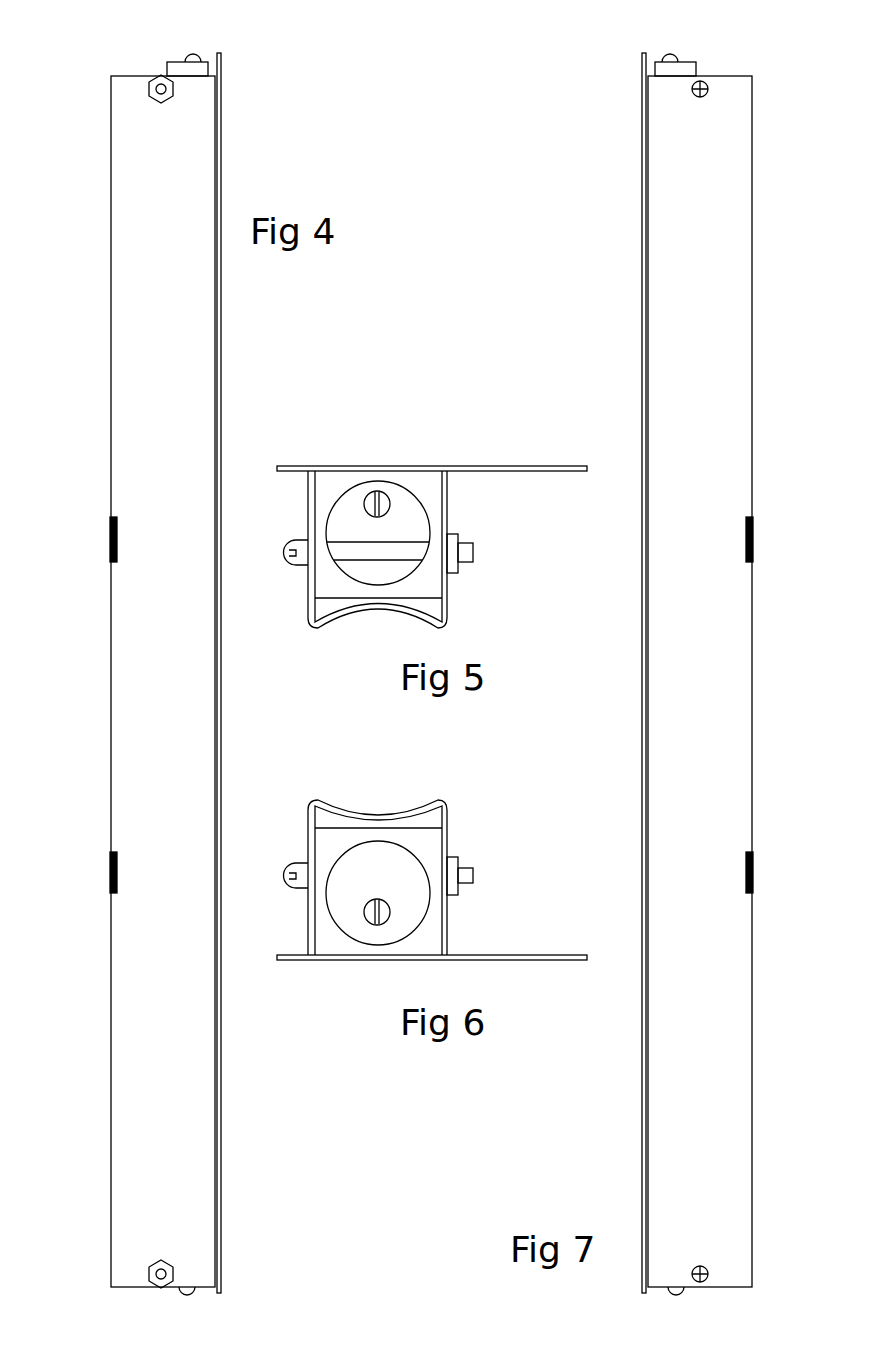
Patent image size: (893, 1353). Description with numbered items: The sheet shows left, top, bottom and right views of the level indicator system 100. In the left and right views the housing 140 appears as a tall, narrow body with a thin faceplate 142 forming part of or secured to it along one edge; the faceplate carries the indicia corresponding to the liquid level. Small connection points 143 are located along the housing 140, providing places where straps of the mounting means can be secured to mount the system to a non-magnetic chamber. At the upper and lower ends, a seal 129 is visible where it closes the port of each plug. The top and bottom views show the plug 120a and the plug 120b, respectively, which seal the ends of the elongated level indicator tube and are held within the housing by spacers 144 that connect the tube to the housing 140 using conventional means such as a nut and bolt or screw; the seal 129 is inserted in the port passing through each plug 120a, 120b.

In FIG. 4, the level indicator system 100 is at (96, 377).
In FIG. 7, the level indicator system 100 is at (767, 377).
In FIG. 5, the plug 120a is at (405, 515).
In FIG. 6, the plug 120b is at (412, 905).
In FIG. 4, the seal 129 is at (193, 54).
In FIG. 5, the seal 129 is at (370, 498).
In FIG. 6, the seal 129 is at (385, 905).
In FIG. 7, the seal 129 is at (670, 54).
In FIG. 4, the housing 140 is at (137, 242).
In FIG. 7, the housing 140 is at (726, 242).
In FIG. 4, the faceplate 142 is at (218, 172).
In FIG. 5, the faceplate 142 is at (522, 466).
In FIG. 7, the faceplate 142 is at (645, 172).
In FIG. 4, the connection points 143 is at (112, 540).
In FIG. 7, the connection points 143 is at (751, 540).
In FIG. 5, the spacers / mounting means 144 is at (432, 482).
In FIG. 6, the spacers / mounting means 144 is at (428, 838).